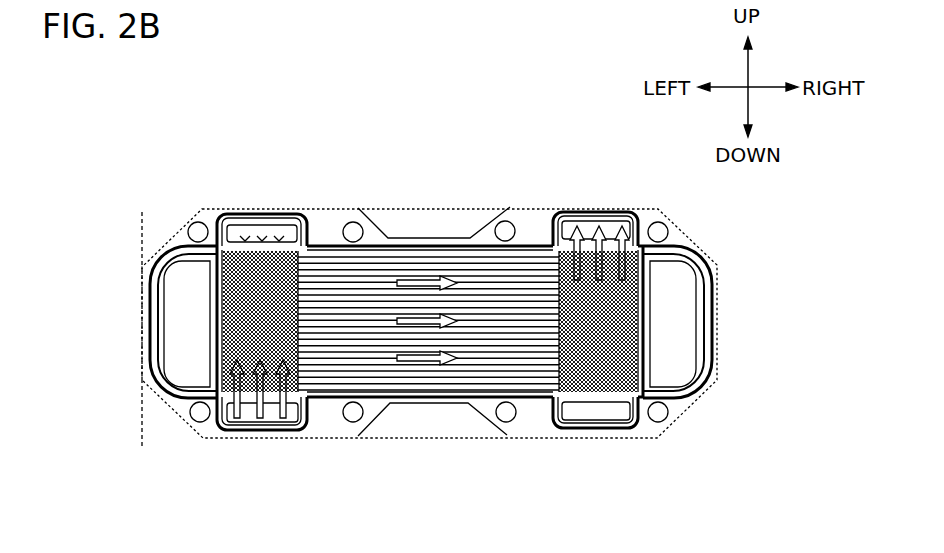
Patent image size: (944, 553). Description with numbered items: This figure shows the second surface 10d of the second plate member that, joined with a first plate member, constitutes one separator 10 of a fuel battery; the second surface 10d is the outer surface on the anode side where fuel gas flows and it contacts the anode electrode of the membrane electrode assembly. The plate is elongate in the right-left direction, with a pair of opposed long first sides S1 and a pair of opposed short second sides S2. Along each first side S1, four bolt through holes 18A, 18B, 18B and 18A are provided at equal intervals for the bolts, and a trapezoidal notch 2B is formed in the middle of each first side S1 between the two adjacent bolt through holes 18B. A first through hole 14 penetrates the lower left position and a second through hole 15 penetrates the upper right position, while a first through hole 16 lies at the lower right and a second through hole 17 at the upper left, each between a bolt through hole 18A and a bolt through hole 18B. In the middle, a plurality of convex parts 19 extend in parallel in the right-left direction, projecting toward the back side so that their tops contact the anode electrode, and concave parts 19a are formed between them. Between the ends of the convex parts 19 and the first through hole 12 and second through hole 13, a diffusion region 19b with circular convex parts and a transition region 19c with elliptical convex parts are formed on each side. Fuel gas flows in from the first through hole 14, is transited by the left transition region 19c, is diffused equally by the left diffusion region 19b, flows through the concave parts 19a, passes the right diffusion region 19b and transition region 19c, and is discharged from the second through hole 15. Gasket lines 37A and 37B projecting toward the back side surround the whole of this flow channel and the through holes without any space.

The separator 10 is at (407, 143).
The second surface 10d is at (693, 243).
The trapezoidal notch 2B is at (483, 222).
The first through hole 12 is at (173, 367).
The second through hole 13 is at (680, 363).
The first through hole 14 is at (260, 433).
The second through hole 15 is at (580, 228).
The first through hole 16 is at (610, 413).
The second through hole 17 is at (247, 230).
The bolt through hole 18A is at (199, 212).
The bolt through hole 18B is at (354, 222).
The convex part 19 is at (390, 357).
The concave part 19a is at (320, 363).
The diffusion region 19b is at (311, 222).
The transition region 19c is at (259, 234).
The gasket line 37A is at (228, 266).
The gasket line 37B is at (222, 293).
The first side S1 is at (152, 208).
The second side S2 is at (142, 410).